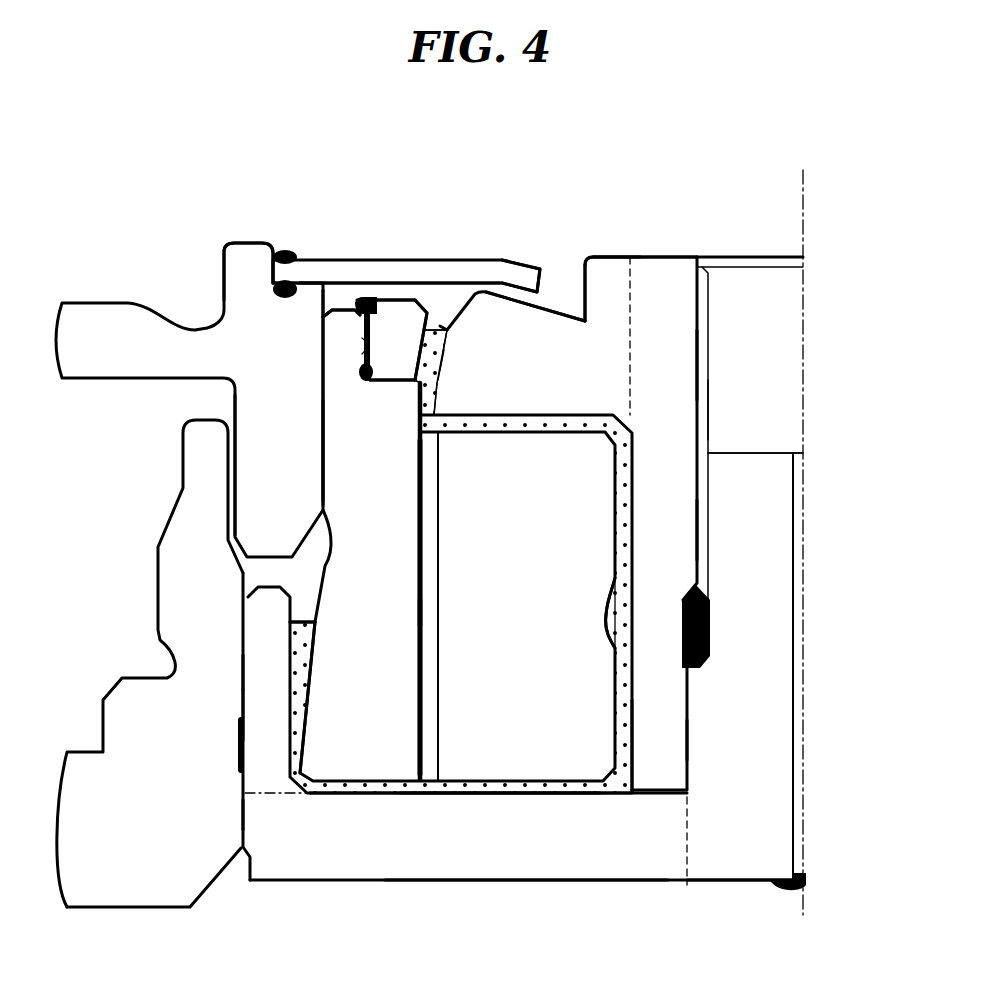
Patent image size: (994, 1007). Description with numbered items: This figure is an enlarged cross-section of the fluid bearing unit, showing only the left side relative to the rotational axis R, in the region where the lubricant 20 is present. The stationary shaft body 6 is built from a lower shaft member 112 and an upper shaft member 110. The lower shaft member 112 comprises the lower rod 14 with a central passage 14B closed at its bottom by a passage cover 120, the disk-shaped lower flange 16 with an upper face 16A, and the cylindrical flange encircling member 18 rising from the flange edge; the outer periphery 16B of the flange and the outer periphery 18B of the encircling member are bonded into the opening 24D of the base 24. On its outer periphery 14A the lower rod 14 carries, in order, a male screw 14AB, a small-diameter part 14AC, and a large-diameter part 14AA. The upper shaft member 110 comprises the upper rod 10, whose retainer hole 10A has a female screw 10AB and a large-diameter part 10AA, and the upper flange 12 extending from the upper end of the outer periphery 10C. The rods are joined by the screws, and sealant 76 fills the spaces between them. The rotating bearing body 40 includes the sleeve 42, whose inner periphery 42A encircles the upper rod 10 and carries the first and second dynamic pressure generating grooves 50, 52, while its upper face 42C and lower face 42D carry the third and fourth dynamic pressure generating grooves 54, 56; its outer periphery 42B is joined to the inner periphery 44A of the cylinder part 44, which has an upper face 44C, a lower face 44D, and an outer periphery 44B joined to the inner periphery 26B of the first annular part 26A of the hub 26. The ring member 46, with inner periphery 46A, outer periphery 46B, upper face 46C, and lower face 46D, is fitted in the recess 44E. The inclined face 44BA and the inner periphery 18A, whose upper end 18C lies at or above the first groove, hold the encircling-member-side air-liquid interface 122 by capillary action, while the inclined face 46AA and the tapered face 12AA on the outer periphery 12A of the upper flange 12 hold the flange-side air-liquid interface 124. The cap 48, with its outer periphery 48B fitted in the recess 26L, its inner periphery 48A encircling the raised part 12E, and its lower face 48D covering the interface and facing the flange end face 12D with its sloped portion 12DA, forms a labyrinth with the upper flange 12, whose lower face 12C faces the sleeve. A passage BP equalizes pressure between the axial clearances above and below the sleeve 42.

The shaft body 6 is at (737, 835).
The upper rod 10 is at (658, 273).
The retainer hole 10A is at (866, 383).
The large-diameter part 10AA is at (708, 453).
The female screw 10AB is at (690, 378).
The outer periphery 10C is at (630, 720).
The upper flange 12 is at (570, 333).
The outer periphery 12A is at (435, 398).
The tapered face 12AA is at (437, 368).
The lower face 12C is at (545, 413).
The flange end face 12D is at (573, 327).
The sloped portion 12DA is at (490, 310).
The raised part 12E is at (600, 273).
The lower rod 14 is at (732, 768).
The outer periphery 14A is at (858, 535).
The large-diameter part 14AA is at (687, 737).
The male screw 14AB is at (697, 527).
The small-diameter part 14AC is at (710, 642).
The passage 14B is at (795, 475).
The lower flange 16 is at (550, 840).
The upper face 16A is at (508, 795).
The outer periphery 16B is at (240, 815).
The flange encircling member 18 is at (273, 752).
The inner periphery 18A is at (293, 697).
The outer periphery 18B is at (245, 670).
The upper end 18C is at (270, 587).
The lubricant 20 is at (613, 607).
The base 24 is at (165, 847).
The opening 24D is at (240, 700).
The hub 26 is at (112, 317).
The first annular part 26A is at (270, 410).
The inner periphery 26B is at (322, 440).
The recess 26L is at (273, 287).
The bearing body 40 is at (347, 830).
The sleeve 42 is at (440, 767).
The inner periphery 42A is at (613, 572).
The outer periphery 42B is at (420, 640).
The upper face 42C is at (450, 433).
The lower face 42D is at (587, 778).
The cylinder part 44 is at (375, 767).
The inner periphery 44A is at (430, 558).
The outer periphery 44B is at (323, 455).
The inclined face 44BA is at (308, 690).
The upper face 44C is at (338, 307).
The lower face 44D is at (340, 780).
The recess 44E is at (373, 345).
The ring member 46 is at (400, 365).
The inner periphery 46A is at (427, 327).
The inclined face 46AA is at (433, 338).
The outer periphery 46B is at (378, 332).
The upper face 46C is at (397, 307).
The lower face 46D is at (385, 365).
The cap 48 is at (347, 270).
The inner periphery 48A is at (537, 279).
The outer periphery 48B is at (292, 252).
The lower face 48D is at (438, 278).
The first dynamic pressure generating groove 50 is at (614, 657).
The second dynamic pressure generating groove 52 is at (614, 452).
The third dynamic pressure generating groove 54 is at (458, 430).
The fourth dynamic pressure generating groove 56 is at (453, 777).
The sealant 76 is at (700, 673).
The upper shaft member 110 is at (675, 189).
The lower shaft member 112 is at (668, 930).
The passage cover 120 is at (795, 892).
The encircling-member-side air-liquid interface 122 is at (300, 622).
The flange-side air-liquid interface 124 is at (445, 325).
The passage BP is at (427, 613).
The rotational axis R is at (800, 529).